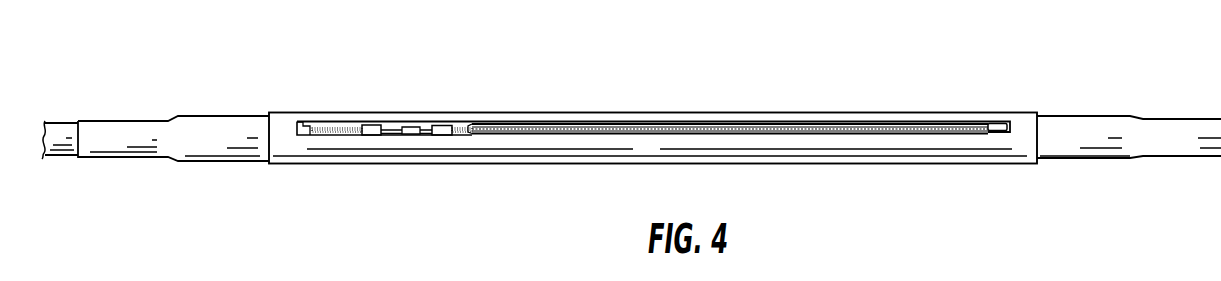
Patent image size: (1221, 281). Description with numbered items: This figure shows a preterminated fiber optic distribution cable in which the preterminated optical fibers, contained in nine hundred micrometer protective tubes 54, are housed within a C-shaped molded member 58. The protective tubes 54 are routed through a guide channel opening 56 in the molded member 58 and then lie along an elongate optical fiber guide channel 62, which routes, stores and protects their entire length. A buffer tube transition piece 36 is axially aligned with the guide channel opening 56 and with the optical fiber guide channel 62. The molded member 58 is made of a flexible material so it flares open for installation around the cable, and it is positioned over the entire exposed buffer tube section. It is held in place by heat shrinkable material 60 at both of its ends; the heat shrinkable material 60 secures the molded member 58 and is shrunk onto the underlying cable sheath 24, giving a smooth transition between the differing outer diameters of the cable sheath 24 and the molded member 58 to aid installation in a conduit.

The cable sheath 24 is at (64, 122).
The heat shrinkable material 60 is at (205, 114).
The C-shaped molded member 58 is at (280, 127).
The buffer tube transition piece 36 is at (372, 125).
The guide channel opening 56 is at (463, 111).
The protective tubes 54 is at (624, 107).
The optical fiber guide channel 62 is at (1005, 112).